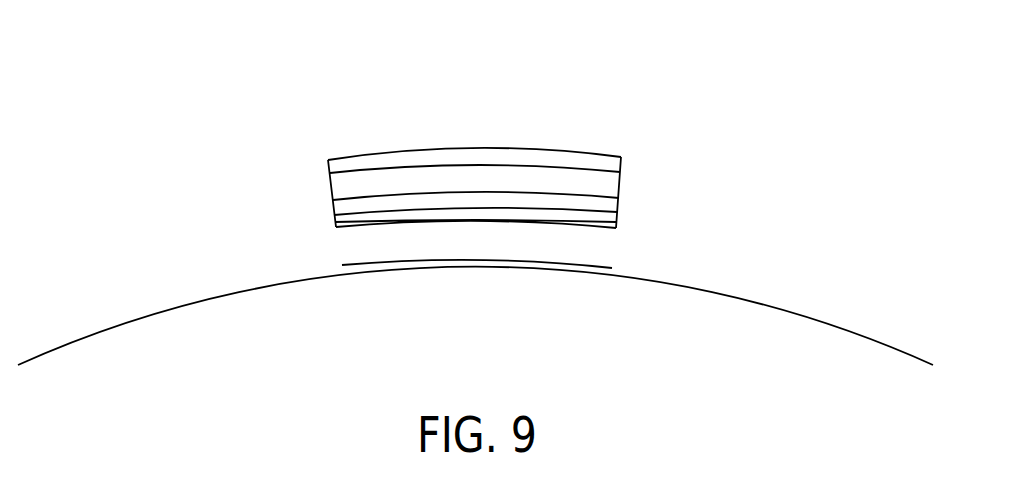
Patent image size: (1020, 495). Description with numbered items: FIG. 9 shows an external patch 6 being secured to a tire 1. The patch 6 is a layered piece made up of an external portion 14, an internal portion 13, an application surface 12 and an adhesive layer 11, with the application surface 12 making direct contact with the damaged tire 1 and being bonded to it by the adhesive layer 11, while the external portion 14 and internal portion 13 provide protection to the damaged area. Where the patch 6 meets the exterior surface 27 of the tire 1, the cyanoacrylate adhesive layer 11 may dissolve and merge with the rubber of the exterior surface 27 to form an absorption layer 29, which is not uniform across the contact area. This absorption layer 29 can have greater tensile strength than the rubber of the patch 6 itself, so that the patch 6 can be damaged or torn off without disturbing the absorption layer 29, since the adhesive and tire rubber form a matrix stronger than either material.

The tire 1 is at (778, 345).
The external patch 6 is at (422, 134).
The adhesive layer 11 is at (605, 222).
The application surface 12 is at (605, 207).
The internal portion 13 is at (602, 187).
The external portion 14 is at (602, 163).
The exterior surface 27 is at (652, 280).
The absorption layer 29 is at (512, 261).